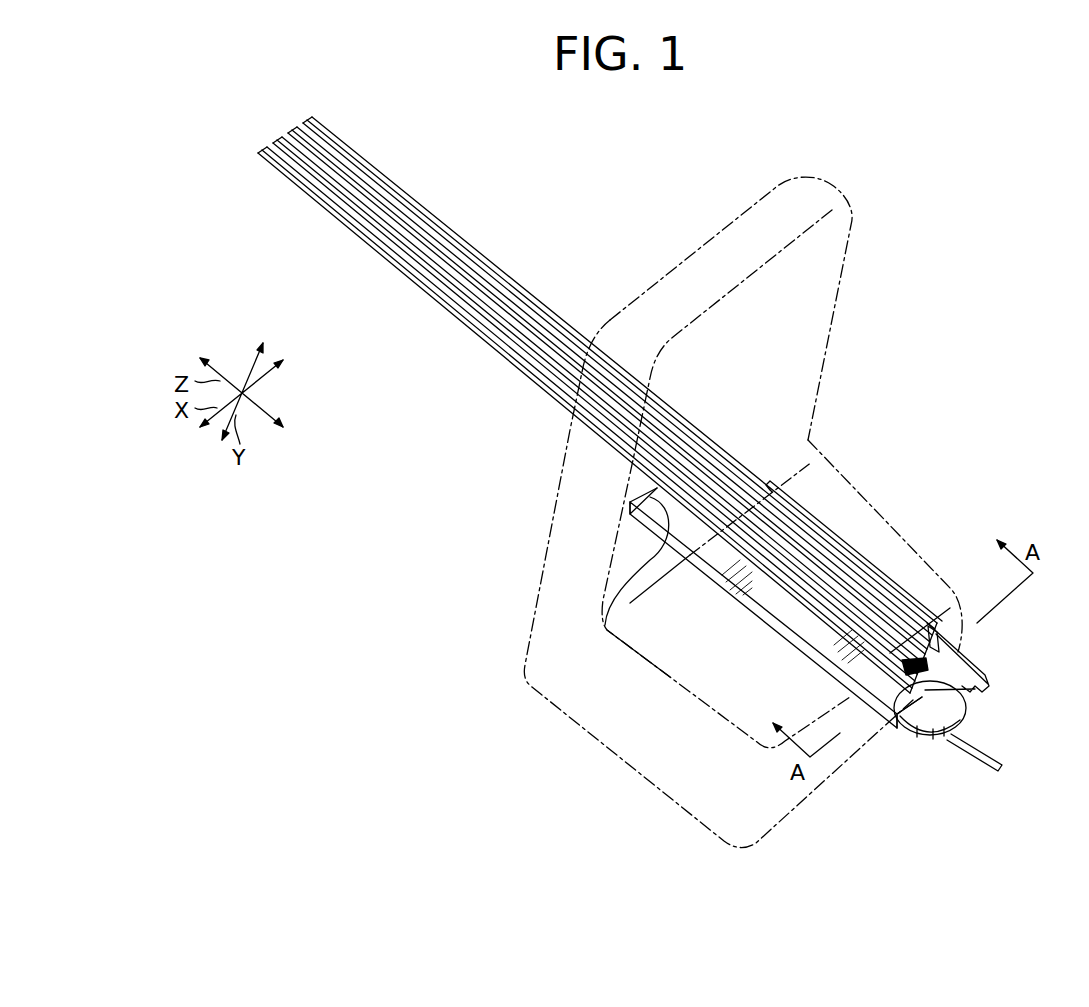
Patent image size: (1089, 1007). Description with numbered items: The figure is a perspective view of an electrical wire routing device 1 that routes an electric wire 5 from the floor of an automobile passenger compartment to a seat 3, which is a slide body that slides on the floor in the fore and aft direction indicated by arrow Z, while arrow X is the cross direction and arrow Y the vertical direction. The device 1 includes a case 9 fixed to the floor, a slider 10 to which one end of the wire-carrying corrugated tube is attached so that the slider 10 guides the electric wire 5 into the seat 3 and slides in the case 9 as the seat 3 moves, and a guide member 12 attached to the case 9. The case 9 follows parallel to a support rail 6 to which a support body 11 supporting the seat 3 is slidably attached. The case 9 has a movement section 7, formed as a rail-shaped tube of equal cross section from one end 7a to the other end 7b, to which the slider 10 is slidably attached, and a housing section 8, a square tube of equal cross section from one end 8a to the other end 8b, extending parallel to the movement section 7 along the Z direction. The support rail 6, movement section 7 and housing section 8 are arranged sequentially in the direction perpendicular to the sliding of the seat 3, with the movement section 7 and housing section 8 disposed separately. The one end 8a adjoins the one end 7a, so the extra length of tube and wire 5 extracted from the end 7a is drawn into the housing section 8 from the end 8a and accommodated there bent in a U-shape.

The electrical wire routing device 1 is at (922, 648).
The seat 3 is at (850, 279).
The electric wire 5 is at (1000, 756).
The support rail 6 is at (985, 661).
The movement section 7 is at (558, 471).
The one end of the movement section 7a is at (896, 690).
The other end of the movement section 7b is at (257, 151).
The housing section 8 is at (713, 652).
The one end of the housing section 8a is at (888, 692).
The other end of the housing section 8b is at (632, 463).
The case 9 is at (558, 479).
The slider 10 is at (928, 656).
The support body 11 is at (862, 553).
The guide member 12 is at (972, 709).